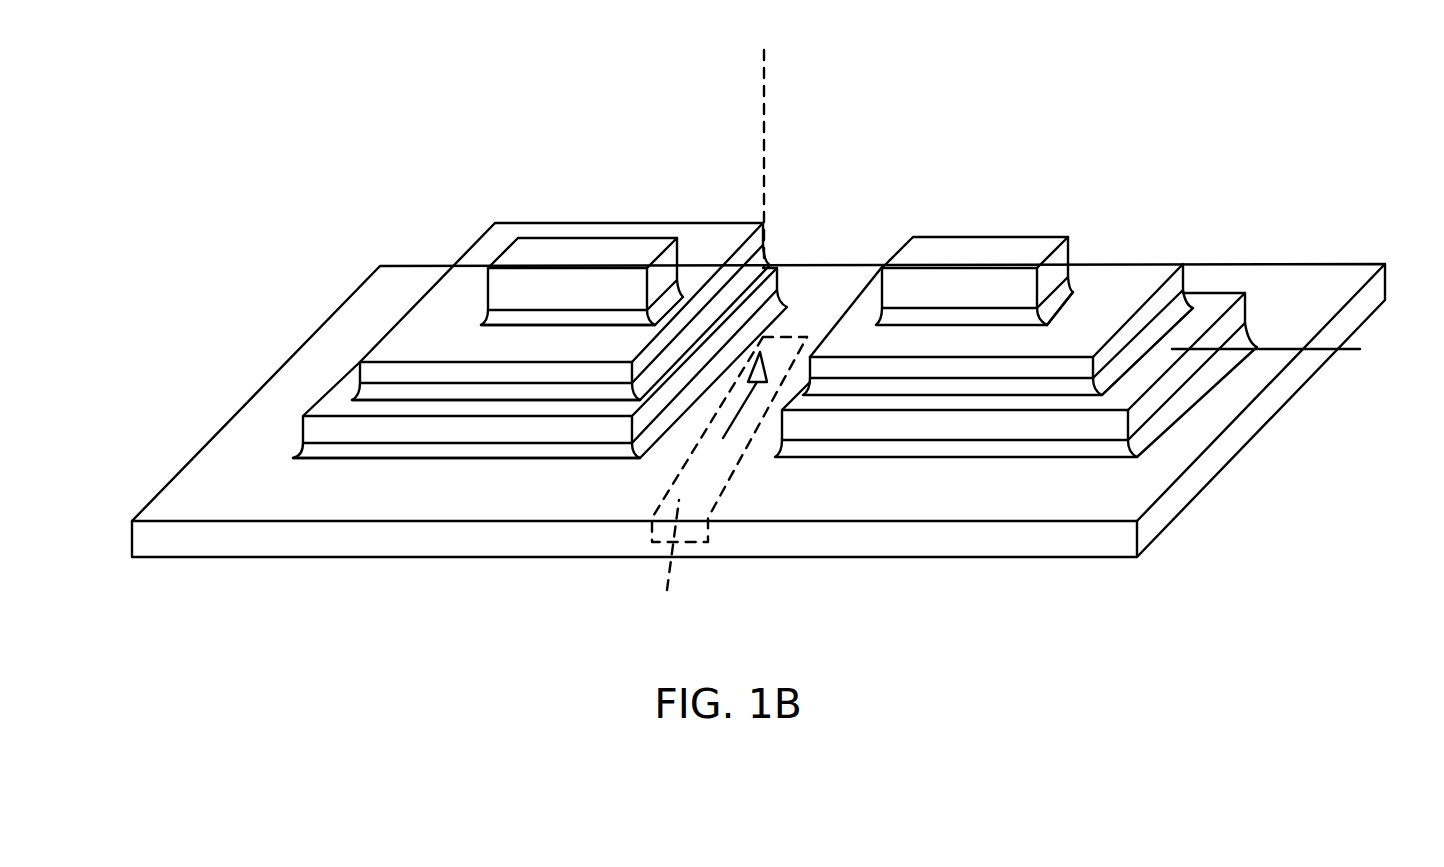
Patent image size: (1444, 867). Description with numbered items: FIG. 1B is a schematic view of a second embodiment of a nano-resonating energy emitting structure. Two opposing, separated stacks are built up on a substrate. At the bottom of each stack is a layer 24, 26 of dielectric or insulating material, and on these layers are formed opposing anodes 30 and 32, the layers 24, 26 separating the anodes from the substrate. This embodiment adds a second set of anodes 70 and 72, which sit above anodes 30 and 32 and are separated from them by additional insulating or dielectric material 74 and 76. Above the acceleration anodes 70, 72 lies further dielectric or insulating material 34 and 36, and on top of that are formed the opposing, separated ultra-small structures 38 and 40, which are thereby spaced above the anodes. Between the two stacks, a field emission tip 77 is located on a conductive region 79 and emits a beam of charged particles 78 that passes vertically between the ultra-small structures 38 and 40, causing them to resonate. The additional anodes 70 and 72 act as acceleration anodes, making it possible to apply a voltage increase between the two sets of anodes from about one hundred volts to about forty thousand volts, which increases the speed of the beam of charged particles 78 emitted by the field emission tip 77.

The layer 24 is at (897, 455).
The layer 26 is at (550, 455).
The anode 30 is at (1298, 362).
The anode 32 is at (447, 428).
The dielectric or insulating material 34 is at (1075, 288).
The dielectric or insulating material 36 is at (540, 322).
The ultra-small structure 38 is at (968, 248).
The ultra-small structure 40 is at (590, 250).
The anode 70 is at (1127, 277).
The anode 72 is at (460, 278).
The insulating or dielectric material 74 is at (1183, 303).
The insulating or dielectric material 76 is at (403, 398).
The field emission tip 77 is at (729, 439).
The beam of charged particles 78 is at (765, 105).
The conductive region 79 is at (645, 565).